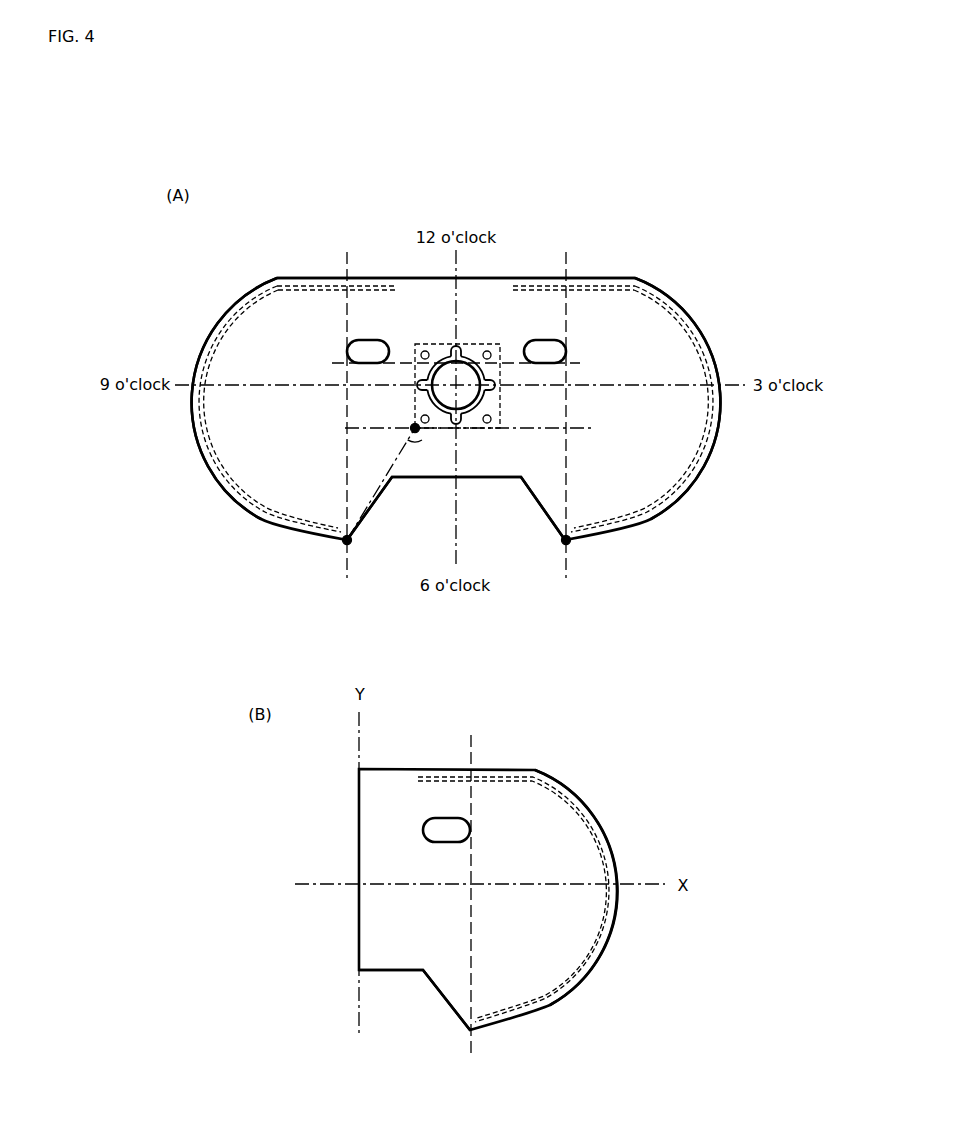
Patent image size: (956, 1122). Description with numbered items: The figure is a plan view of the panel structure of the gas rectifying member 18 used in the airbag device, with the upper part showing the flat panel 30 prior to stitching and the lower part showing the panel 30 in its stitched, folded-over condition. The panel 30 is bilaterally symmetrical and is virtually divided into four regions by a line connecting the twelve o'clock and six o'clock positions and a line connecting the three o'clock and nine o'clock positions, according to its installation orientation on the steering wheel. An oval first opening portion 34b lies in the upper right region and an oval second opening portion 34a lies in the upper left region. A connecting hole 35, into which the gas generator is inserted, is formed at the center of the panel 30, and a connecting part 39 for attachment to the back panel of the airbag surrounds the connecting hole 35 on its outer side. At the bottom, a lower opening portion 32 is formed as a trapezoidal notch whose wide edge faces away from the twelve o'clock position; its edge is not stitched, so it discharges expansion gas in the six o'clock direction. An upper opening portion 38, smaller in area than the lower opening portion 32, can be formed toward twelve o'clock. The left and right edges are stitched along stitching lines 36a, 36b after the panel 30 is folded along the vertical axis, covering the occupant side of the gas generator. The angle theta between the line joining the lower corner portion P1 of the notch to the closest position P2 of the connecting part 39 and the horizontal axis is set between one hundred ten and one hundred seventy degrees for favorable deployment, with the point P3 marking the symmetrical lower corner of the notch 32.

The gas rectifying member 18 is at (632, 250).
The panel 30 is at (323, 277).
The lower opening portion 32 is at (541, 508).
The second opening portion 34a is at (367, 340).
The first opening portion 34b is at (551, 341).
The connecting hole 35 is at (497, 381).
The stitching line 36a is at (238, 318).
The stitching line 36b is at (678, 492).
The upper opening portion 38 is at (494, 287).
The connecting part 39 is at (415, 402).
The lower corner portion P1 is at (345, 545).
The closest position of the connecting part P2 is at (412, 428).
The point P3 is at (570, 541).